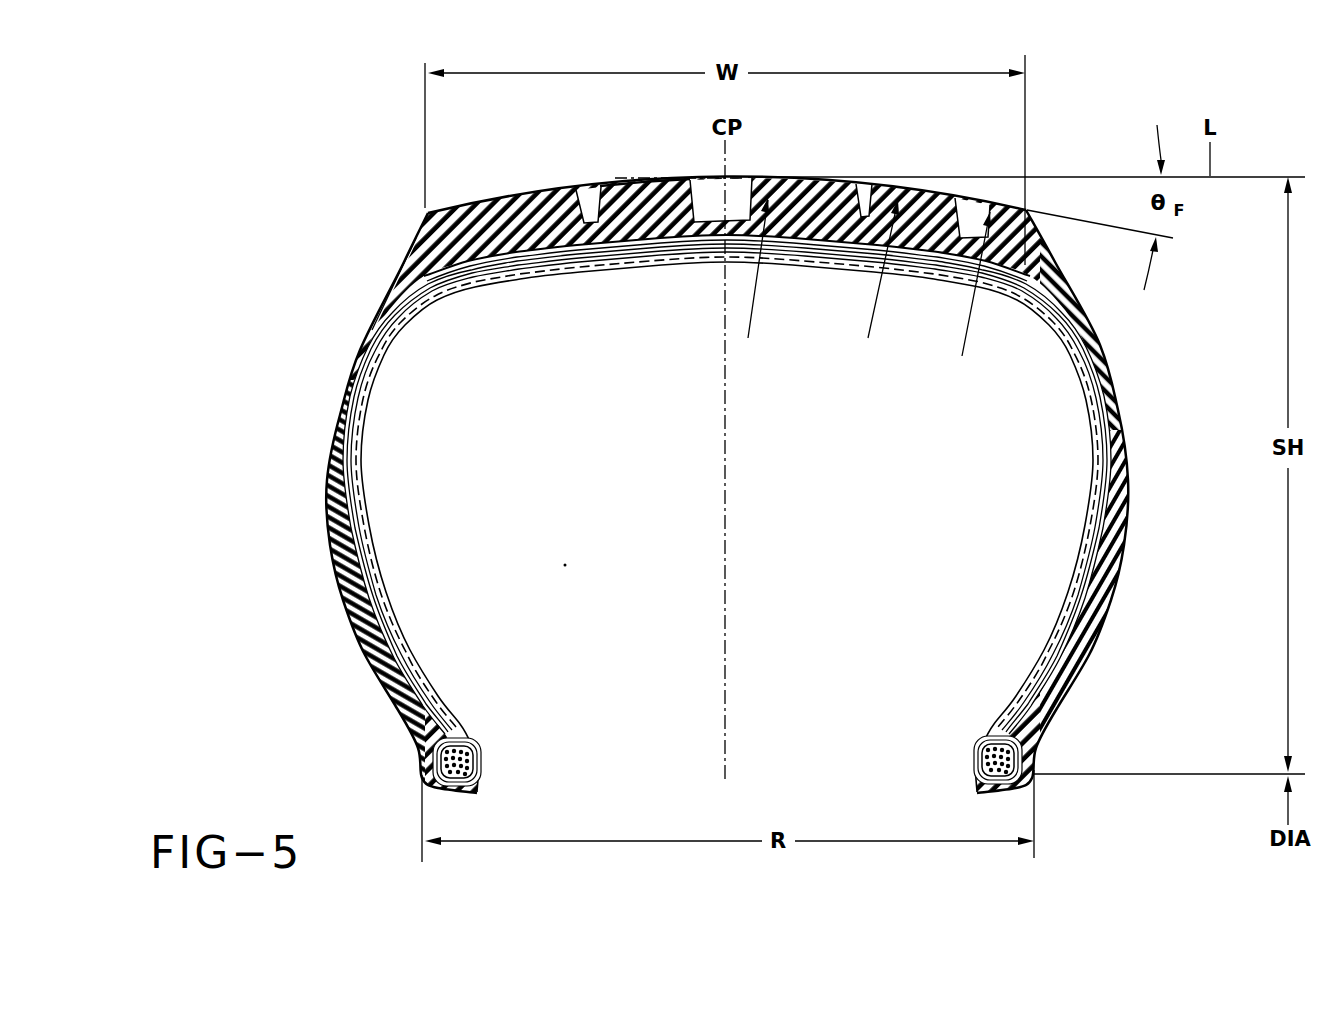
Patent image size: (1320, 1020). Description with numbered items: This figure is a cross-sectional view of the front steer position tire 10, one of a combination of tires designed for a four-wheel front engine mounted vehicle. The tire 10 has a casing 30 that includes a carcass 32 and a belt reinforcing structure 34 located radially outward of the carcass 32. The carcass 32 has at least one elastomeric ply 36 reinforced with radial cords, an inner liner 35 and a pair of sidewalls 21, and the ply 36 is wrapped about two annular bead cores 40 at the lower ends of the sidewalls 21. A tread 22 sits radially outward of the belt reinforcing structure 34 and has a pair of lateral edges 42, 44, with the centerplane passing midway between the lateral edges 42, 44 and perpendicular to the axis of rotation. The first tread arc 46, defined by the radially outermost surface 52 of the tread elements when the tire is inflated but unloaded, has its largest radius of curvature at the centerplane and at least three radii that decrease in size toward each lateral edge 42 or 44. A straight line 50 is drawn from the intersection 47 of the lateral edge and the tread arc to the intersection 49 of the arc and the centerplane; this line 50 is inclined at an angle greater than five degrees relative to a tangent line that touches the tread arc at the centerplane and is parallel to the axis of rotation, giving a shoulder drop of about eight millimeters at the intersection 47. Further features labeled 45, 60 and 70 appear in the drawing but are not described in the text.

The tire 10 is at (778, 427).
The sidewalls 21 is at (337, 422).
The tread 22 is at (533, 192).
The casing 30 is at (356, 303).
The carcass 32 is at (328, 478).
The belt reinforcing structure 34 is at (662, 246).
The inner liner 35 is at (585, 265).
The elastomeric ply 36 is at (360, 448).
The annular bead cores 40 is at (478, 768).
The lateral edge 42 is at (425, 122).
The lateral edge 44 is at (1030, 122).
The first shoulder 45 is at (512, 195).
The first tread arc 46 is at (585, 188).
The intersection of the lateral edge and the tread arc 47 is at (1030, 208).
The intersection of the arc and the centerplane 49 is at (735, 178).
The straight line 50 is at (1090, 230).
The radially outermost surface of the tread elements 52 is at (660, 182).
The central groove 60 is at (705, 196).
The tread ribs 70 is at (625, 190).